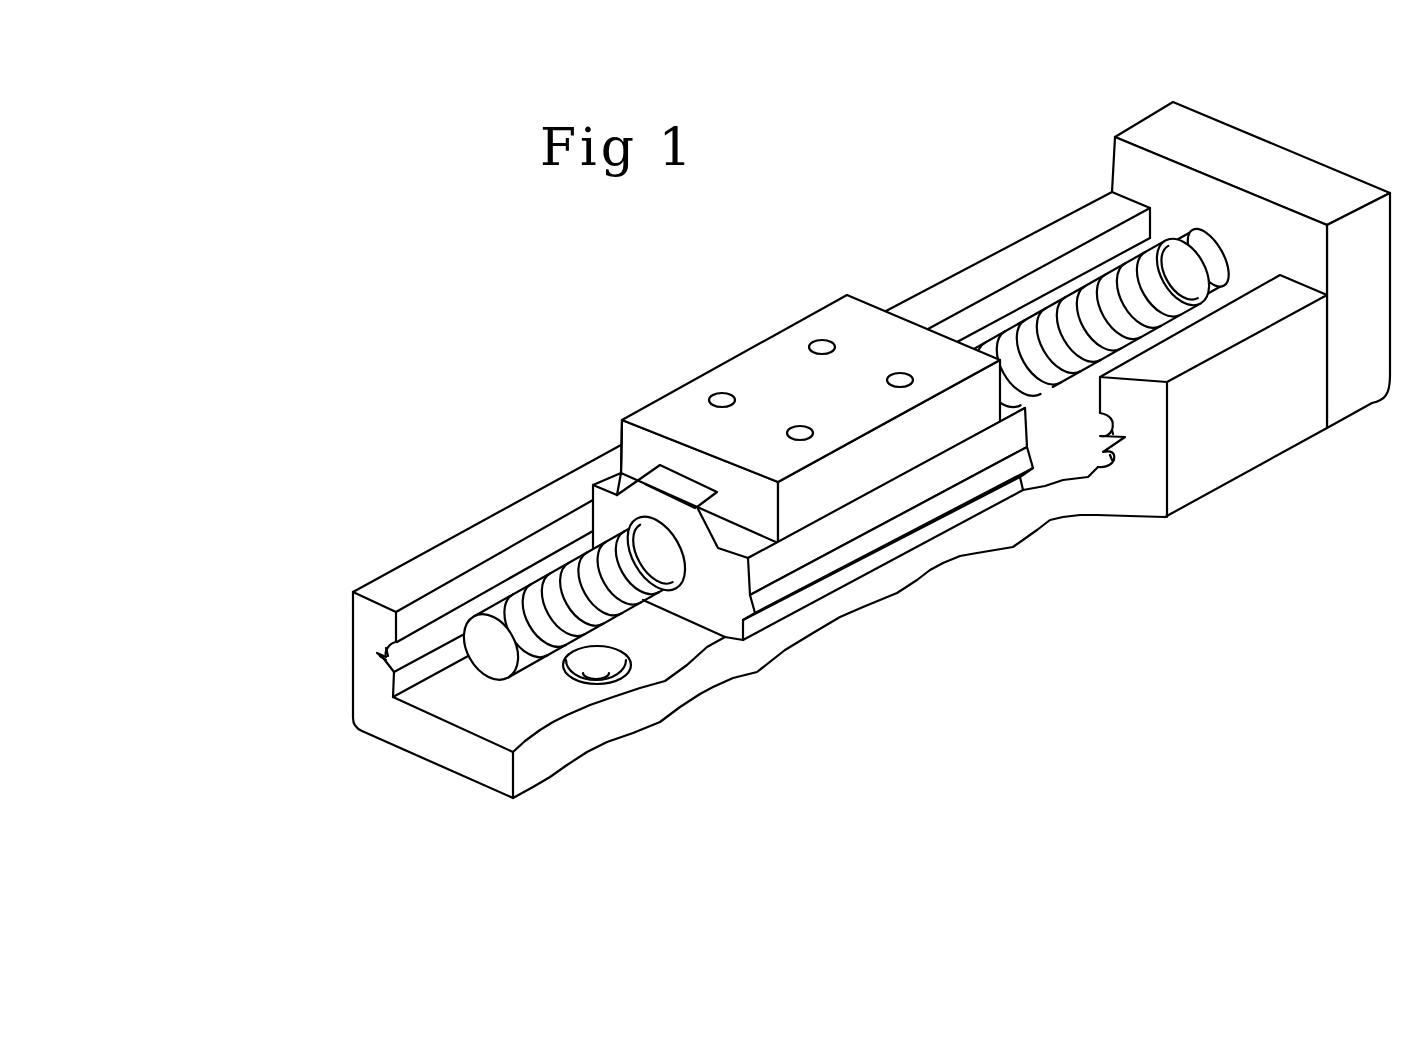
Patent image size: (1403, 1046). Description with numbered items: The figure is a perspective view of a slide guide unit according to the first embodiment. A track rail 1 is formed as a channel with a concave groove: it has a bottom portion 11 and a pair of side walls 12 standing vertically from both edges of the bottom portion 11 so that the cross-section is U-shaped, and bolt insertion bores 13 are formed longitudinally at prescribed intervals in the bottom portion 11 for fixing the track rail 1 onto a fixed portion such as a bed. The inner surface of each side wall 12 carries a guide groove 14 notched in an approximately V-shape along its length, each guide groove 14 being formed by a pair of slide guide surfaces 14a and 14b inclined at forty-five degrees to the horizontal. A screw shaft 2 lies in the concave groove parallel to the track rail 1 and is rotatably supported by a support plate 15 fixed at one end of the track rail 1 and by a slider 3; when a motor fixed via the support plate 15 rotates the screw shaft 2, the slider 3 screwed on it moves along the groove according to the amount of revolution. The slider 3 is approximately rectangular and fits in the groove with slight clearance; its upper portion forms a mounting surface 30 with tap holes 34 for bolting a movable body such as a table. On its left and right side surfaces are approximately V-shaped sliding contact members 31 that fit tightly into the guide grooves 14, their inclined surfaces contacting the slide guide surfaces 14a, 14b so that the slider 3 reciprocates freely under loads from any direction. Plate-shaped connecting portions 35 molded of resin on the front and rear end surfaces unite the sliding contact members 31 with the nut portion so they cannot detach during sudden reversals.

The track rail 1 is at (503, 542).
The screw shaft 2 is at (1061, 328).
The slider 3 is at (622, 431).
The bottom portion 11 is at (453, 753).
The side wall 12 is at (400, 563).
The bolt insertion bore 13 is at (593, 676).
The guide groove 14 is at (213, 585).
The slide guide surface 14a is at (383, 655).
The slide guide surface 14b is at (377, 654).
The support plate 15 is at (1160, 125).
The mounting surface 30 is at (773, 373).
The sliding contact member 31 is at (965, 493).
The tap holes 34 is at (820, 340).
The connecting portion 35 is at (717, 605).